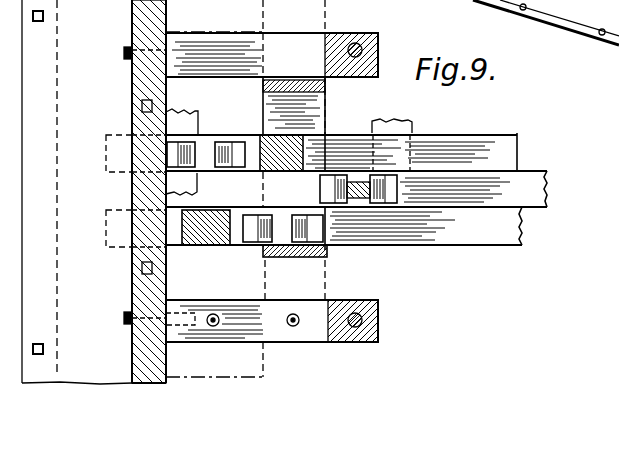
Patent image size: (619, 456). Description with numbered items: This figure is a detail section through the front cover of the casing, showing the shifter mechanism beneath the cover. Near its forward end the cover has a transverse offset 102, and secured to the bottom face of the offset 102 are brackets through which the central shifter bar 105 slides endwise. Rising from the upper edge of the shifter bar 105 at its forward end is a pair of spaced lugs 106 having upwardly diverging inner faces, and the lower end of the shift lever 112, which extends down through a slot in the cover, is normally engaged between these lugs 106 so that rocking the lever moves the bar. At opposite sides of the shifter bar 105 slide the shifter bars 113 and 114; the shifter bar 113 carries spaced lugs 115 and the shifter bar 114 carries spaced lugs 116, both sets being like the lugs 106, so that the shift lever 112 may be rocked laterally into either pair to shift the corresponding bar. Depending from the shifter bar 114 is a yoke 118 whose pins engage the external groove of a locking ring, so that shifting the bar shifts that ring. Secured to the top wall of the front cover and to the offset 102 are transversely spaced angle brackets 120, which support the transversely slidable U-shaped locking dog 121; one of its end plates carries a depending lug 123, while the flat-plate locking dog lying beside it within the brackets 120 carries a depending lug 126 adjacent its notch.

The transverse offset 102 is at (167, 17).
The shifter bar 105 is at (538, 183).
The spaced lugs 106 is at (392, 182).
The shift lever 112 is at (357, 195).
The shifter bar 113 is at (474, 231).
The shifter bar 114 is at (498, 145).
The spaced lugs 115 is at (252, 232).
The spaced lugs 116 is at (241, 141).
The yoke 118 is at (197, 108).
The angle brackets 120 is at (378, 45).
The locking dog 121 is at (309, 258).
The depending lug 123 is at (304, 134).
The lug 126 is at (201, 237).